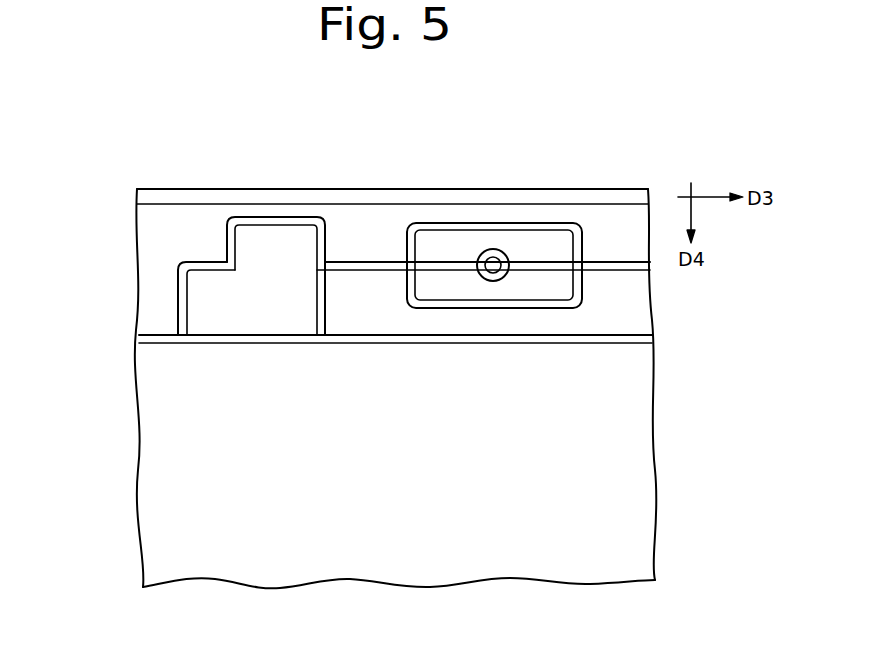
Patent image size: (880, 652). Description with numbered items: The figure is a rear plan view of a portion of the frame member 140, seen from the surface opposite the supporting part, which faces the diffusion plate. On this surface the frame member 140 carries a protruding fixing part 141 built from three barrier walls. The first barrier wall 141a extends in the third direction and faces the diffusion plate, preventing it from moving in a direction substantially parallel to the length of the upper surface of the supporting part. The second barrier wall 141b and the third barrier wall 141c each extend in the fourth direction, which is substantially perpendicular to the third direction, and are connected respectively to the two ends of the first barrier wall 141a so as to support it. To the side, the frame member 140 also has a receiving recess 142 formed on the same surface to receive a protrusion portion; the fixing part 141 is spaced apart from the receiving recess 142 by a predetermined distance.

The frame member 140 is at (148, 243).
The fixing part 141 is at (382, 122).
The first barrier wall 141a is at (278, 221).
The second barrier wall 141b is at (227, 243).
The third barrier wall 141c is at (325, 242).
The receiving recess 142 is at (517, 240).